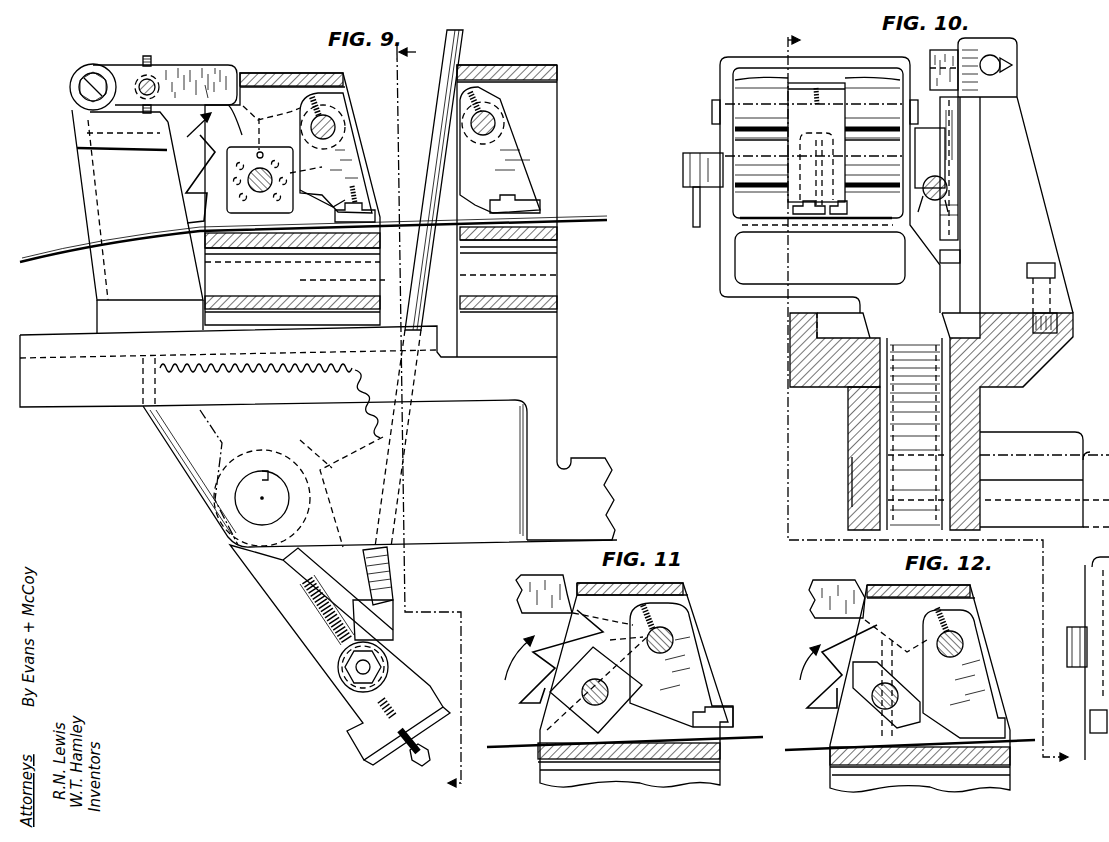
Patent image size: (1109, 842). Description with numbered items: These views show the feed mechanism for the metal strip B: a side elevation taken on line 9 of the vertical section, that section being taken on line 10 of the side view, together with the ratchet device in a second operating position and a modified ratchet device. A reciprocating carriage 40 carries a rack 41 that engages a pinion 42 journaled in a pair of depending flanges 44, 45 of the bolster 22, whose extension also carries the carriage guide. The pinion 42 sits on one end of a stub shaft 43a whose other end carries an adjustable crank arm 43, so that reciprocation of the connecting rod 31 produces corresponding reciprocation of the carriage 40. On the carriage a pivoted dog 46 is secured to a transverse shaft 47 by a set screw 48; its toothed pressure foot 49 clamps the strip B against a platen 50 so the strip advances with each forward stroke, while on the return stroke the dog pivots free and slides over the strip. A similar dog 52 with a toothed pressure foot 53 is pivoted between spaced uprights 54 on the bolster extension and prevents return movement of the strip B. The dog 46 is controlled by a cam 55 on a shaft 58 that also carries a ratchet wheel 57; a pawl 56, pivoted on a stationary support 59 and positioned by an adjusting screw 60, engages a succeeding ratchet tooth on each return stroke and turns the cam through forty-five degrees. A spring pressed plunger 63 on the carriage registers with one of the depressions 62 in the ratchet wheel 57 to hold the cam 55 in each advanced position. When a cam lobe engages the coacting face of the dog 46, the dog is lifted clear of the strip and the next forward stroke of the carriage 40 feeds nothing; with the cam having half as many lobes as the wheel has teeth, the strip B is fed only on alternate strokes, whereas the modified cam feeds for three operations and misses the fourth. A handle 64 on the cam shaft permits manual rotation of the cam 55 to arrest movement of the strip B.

In FIG. 10, the section line 9— 9 is at (937, 401).
In FIG. 9, the section line 10— 10 is at (429, 420).
In FIG. 9, the bolster 22 is at (552, 366).
In FIG. 10, the bolster 22 is at (793, 348).
In FIG. 9, the connecting rod 31 is at (443, 97).
In FIG. 9, the reciprocating carriage 40 is at (306, 199).
In FIG. 10, the reciprocating carriage 40 is at (728, 277).
In FIG. 9, the rack 41 is at (337, 373).
In FIG. 10, the rack 41 is at (922, 342).
In FIG. 9, the pinion 42 is at (343, 440).
In FIG. 10, the pinion 42 is at (982, 395).
In FIG. 9, the crank arm 43 is at (270, 581).
In FIG. 10, the crank arm 43 is at (1085, 576).
In FIG. 9, the stub shaft 43a is at (265, 510).
In FIG. 10, the stub shaft 43a is at (852, 490).
In FIG. 9, the depending flange 44 is at (197, 463).
In FIG. 10, the depending flange 44 is at (857, 425).
In FIG. 10, the depending flange 45 is at (983, 426).
In FIG. 9, the dog 46 is at (350, 143).
In FIG. 10, the dog 46 is at (816, 144).
In FIG. 11, the dog 46 is at (695, 650).
In FIG. 12, the dog 46 is at (985, 655).
In FIG. 9, the transverse shaft 47 is at (335, 128).
In FIG. 10, the transverse shaft 47 is at (712, 112).
In FIG. 11, the transverse shaft 47 is at (673, 637).
In FIG. 12, the transverse shaft 47 is at (963, 643).
In FIG. 9, the set screw 48 is at (338, 92).
In FIG. 10, the set screw 48 is at (820, 82).
In FIG. 11, the set screw 48 is at (643, 610).
In FIG. 12, the set screw 48 is at (937, 612).
In FIG. 9, the toothed pressure foot 49 is at (377, 211).
In FIG. 10, the toothed pressure foot 49 is at (820, 216).
In FIG. 11, the toothed pressure foot 49 is at (733, 712).
In FIG. 9, the platen 50 is at (355, 243).
In FIG. 10, the platen 50 is at (843, 220).
In FIG. 11, the platen 50 is at (722, 750).
In FIG. 12, the platen 50 is at (1005, 755).
In FIG. 9, the dog 52 is at (510, 141).
In FIG. 9, the toothed pressure foot 53 is at (545, 209).
In FIG. 9, the spaced uprights 54 is at (541, 93).
In FIG. 11, the cam 55 is at (620, 705).
In FIG. 9, the pawl 56 is at (222, 75).
In FIG. 10, the pawl 56 is at (947, 50).
In FIG. 11, the pawl 56 is at (541, 585).
In FIG. 12, the pawl 56 is at (815, 590).
In FIG. 9, the ratchet wheel 57 is at (205, 192).
In FIG. 10, the ratchet wheel 57 is at (955, 230).
In FIG. 11, the ratchet wheel 57 is at (553, 653).
In FIG. 9, the shaft 58 is at (262, 192).
In FIG. 11, the shaft 58 is at (594, 679).
In FIG. 9, the stationary support 59 is at (107, 187).
In FIG. 10, the stationary support 59 is at (1013, 141).
In FIG. 9, the adjusting screw 60 is at (148, 60).
In FIG. 9, the depressions 62 is at (287, 181).
In FIG. 10, the depressions 62 is at (948, 193).
In FIG. 10, the spring pressed plunger 63 is at (932, 212).
In FIG. 10, the handle 64 is at (693, 195).
In FIG. 9, the metal strip B is at (42, 256).
In FIG. 10, the metal strip B is at (878, 216).
In FIG. 11, the metal strip B is at (500, 742).
In FIG. 12, the metal strip B is at (800, 746).